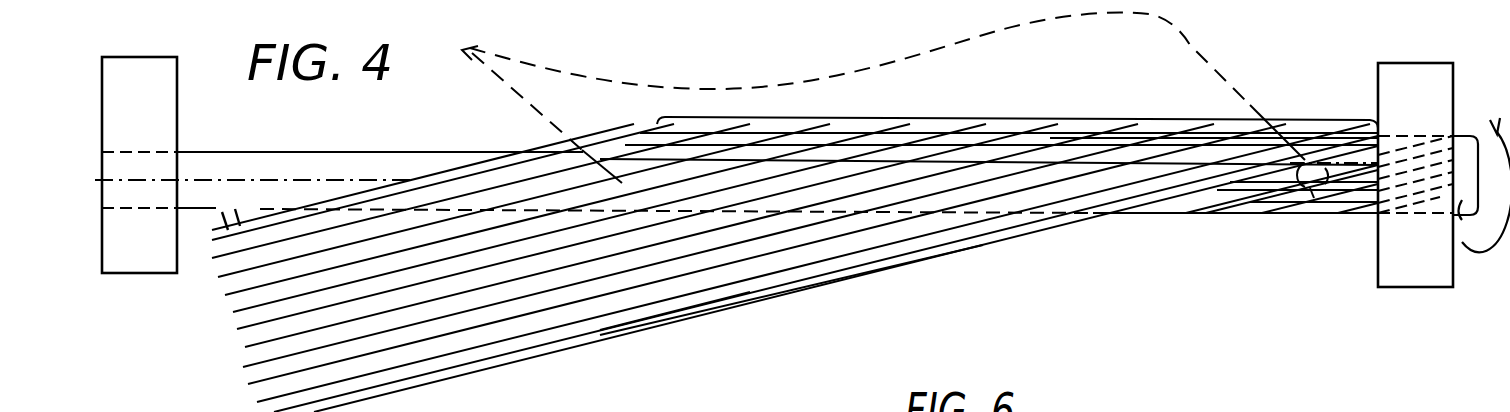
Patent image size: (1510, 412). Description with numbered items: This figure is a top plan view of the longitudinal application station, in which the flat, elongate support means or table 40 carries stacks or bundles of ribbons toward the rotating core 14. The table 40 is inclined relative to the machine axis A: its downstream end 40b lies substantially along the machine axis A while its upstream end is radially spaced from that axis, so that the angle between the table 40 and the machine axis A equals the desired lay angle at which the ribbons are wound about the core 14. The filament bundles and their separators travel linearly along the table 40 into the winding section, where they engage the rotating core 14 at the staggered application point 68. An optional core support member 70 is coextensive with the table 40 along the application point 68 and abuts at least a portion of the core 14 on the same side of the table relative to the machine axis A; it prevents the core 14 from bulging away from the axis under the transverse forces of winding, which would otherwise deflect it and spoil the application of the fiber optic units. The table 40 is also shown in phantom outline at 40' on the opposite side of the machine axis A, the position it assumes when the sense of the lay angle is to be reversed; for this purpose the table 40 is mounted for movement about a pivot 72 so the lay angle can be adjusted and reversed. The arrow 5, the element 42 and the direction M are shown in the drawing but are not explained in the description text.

The strip feed direction arrow 5 is at (208, 213).
The core 14 is at (336, 158).
The table 40 is at (795, 268).
The table in phantom outline 40' is at (879, 98).
The downstream end 40b is at (983, 246).
The strip filaments 42 is at (662, 312).
The staggered application point 68 is at (1024, 121).
The core support member 70 is at (1133, 217).
The pivot 72 is at (1290, 212).
The machine axis A is at (225, 180).
The mandrel rotation direction M is at (1297, 247).